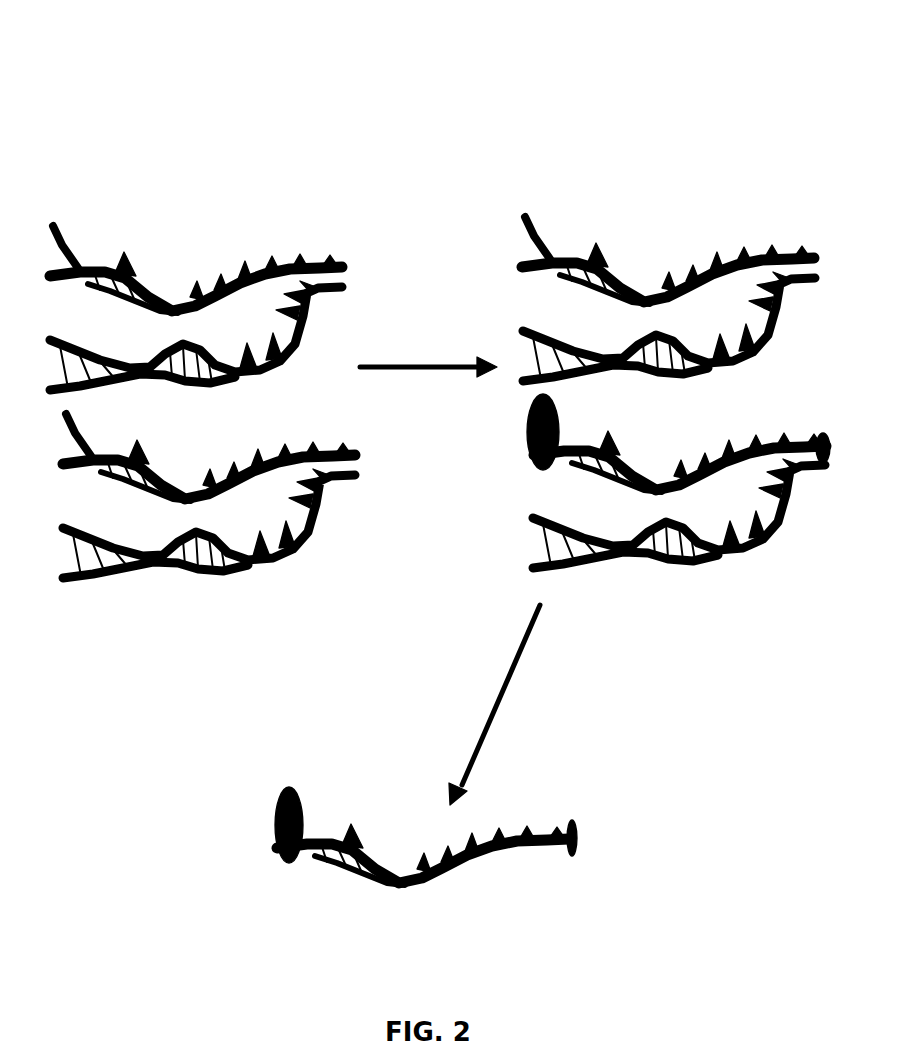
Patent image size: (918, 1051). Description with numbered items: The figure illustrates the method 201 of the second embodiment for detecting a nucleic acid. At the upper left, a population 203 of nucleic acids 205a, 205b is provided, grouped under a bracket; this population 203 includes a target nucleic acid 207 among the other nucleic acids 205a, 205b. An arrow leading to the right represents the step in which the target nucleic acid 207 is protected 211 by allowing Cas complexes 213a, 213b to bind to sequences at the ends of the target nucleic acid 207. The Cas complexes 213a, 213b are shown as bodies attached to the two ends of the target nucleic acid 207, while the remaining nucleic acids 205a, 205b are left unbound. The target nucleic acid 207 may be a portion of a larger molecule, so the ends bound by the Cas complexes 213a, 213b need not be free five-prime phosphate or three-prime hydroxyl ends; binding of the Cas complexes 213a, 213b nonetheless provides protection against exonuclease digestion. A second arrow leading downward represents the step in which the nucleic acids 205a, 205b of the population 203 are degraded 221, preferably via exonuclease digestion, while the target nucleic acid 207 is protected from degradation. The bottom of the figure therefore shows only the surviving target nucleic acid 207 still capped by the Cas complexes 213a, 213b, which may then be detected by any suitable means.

The method 201 is at (440, 72).
The population 203 is at (333, 203).
The nucleic acid 205a is at (168, 290).
The nucleic acid 205b is at (180, 575).
The target nucleic acid 207 is at (178, 480).
The protecting step 211 is at (428, 349).
The Cas complex 213a is at (527, 435).
The Cas complex 213b is at (827, 440).
The degrading step 221 is at (491, 705).